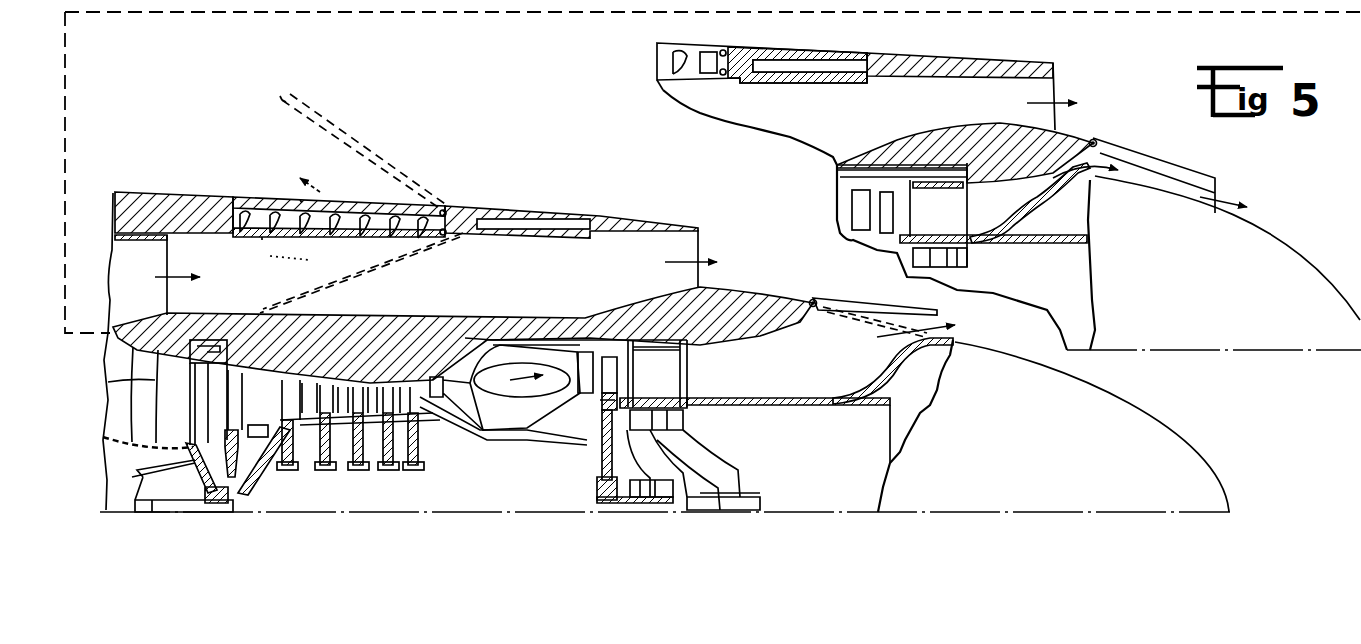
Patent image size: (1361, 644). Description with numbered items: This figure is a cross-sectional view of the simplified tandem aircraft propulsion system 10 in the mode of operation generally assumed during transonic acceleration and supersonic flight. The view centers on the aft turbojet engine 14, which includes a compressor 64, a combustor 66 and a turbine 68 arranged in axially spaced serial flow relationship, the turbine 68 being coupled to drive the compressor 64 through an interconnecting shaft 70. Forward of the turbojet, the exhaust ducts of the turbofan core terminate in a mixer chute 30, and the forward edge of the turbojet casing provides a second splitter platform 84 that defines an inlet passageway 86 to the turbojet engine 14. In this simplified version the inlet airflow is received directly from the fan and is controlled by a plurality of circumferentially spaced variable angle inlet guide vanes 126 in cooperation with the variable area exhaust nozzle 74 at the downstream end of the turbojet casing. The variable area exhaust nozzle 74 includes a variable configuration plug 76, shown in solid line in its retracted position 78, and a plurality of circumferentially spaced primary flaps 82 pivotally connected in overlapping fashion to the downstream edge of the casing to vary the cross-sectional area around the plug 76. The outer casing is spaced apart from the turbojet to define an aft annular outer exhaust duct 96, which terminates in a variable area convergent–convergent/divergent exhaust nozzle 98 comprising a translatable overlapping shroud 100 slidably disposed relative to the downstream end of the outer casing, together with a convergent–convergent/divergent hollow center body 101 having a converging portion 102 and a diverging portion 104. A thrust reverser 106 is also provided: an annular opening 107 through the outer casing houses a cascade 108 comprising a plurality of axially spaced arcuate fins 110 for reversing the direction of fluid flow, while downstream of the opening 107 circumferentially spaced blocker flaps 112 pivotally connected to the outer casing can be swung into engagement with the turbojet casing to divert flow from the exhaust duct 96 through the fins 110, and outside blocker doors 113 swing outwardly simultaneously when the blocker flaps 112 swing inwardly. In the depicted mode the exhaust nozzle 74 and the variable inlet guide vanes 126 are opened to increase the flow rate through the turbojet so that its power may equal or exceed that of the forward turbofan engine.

The tandem aircraft propulsion system 10 is at (872, 43).
The turbojet engine 14 is at (450, 310).
The mixer chute 30 is at (151, 351).
The compressor 64 is at (368, 372).
The combustor 66 is at (520, 411).
The turbine 68 is at (622, 378).
The interconnecting shaft 70 is at (527, 445).
The variable area exhaust nozzle 74 is at (848, 294).
The variable configuration plug 76 is at (1108, 386).
The retracted position of plug 78 is at (893, 371).
The primary flaps 82 is at (857, 313).
The second splitter platform 84 is at (110, 347).
The inlet passageway 86 is at (142, 419).
The aft annular outer exhaust duct 96 is at (249, 291).
The variable area convergent–convergent/divergent exhaust nozzle 98 is at (727, 243).
The translatable overlapping shroud 100 is at (678, 228).
The convergent–convergent/divergent hollow center body 101 is at (730, 283).
The converging portion 102 is at (633, 318).
The diverging portion 104 is at (808, 300).
The thrust reverser 106 is at (438, 192).
The annular opening 107 is at (255, 208).
The cascade 108 is at (280, 192).
The arcuate fins 110 is at (270, 247).
The blocker flaps 112 is at (318, 225).
The outside blocker doors 113 is at (398, 203).
The variable angle inlet guide vanes 126 is at (108, 382).